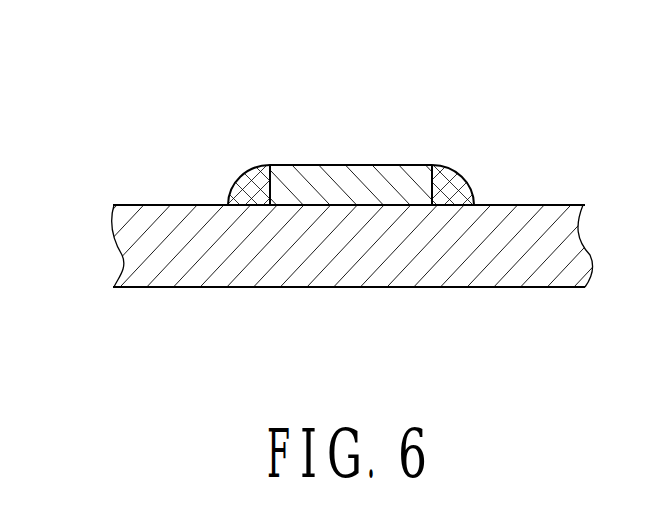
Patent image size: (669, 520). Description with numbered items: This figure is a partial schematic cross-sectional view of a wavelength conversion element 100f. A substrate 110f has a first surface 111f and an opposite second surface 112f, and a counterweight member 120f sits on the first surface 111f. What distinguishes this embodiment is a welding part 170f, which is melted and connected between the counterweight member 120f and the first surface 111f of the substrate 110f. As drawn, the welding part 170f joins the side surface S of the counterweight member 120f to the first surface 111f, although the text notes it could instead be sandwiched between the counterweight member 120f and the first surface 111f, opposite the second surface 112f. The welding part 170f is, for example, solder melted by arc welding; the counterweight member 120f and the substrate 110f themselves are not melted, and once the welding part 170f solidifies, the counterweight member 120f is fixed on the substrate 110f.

The wavelength conversion element 100f is at (70, 44).
The substrate 110f is at (145, 222).
The first surface 111f is at (189, 204).
The second surface 112f is at (484, 288).
The counterweight member 120f is at (348, 178).
The welding part 170f is at (463, 189).
The side surface S is at (268, 183).